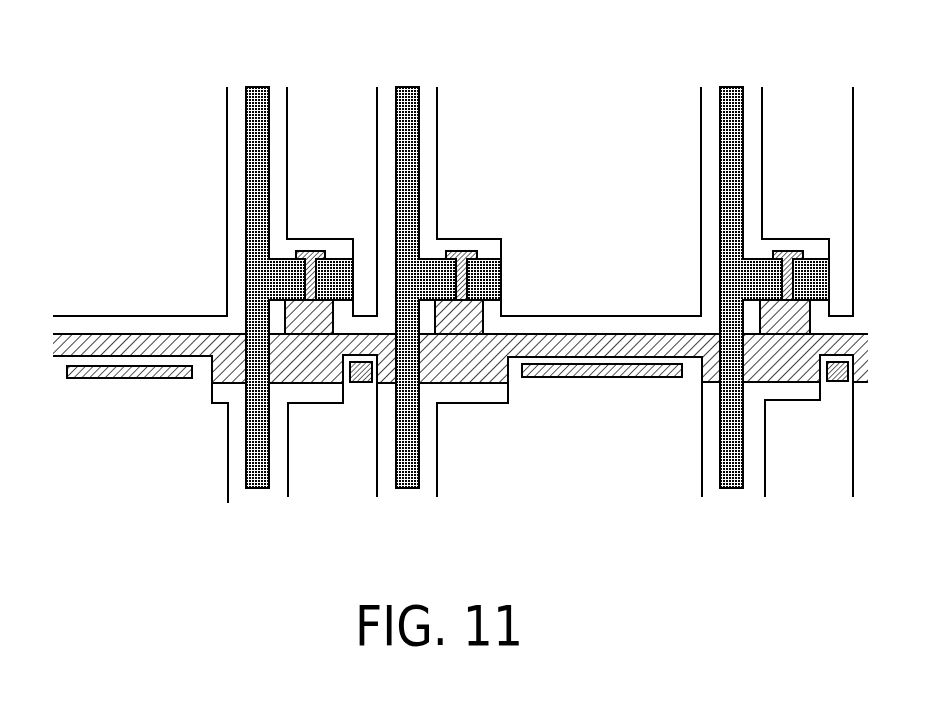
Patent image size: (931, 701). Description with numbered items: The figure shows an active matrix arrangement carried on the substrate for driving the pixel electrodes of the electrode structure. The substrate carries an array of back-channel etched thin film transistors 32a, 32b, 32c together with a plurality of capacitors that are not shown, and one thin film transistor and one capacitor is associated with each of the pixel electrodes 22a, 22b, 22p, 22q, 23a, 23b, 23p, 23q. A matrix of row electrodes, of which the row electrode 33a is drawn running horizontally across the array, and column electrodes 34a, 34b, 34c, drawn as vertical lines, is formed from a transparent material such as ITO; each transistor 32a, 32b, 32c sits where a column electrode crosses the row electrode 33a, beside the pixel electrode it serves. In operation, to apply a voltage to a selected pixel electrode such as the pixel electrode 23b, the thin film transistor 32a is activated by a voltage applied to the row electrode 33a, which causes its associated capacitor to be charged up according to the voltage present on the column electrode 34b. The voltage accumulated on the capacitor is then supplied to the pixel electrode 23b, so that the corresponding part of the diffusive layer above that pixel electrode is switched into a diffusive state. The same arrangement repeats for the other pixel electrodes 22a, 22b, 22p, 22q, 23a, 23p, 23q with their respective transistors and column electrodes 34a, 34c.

The pixel electrode 22a is at (332, 201).
The pixel electrode 22b is at (807, 201).
The pixel electrode 22p is at (332, 426).
The pixel electrode 22q is at (809, 426).
The pixel electrode 23a is at (140, 201).
The pixel electrode 23b is at (569, 201).
The pixel electrode 23p is at (176, 443).
The pixel electrode 23q is at (569, 439).
The thin film transistor 32a is at (319, 251).
The thin film transistor 32b is at (466, 252).
The thin film transistor 32c is at (792, 251).
The row electrode 33a is at (53, 357).
The column electrode 34a is at (257, 88).
The column electrode 34b is at (409, 88).
The column electrode 34c is at (731, 87).